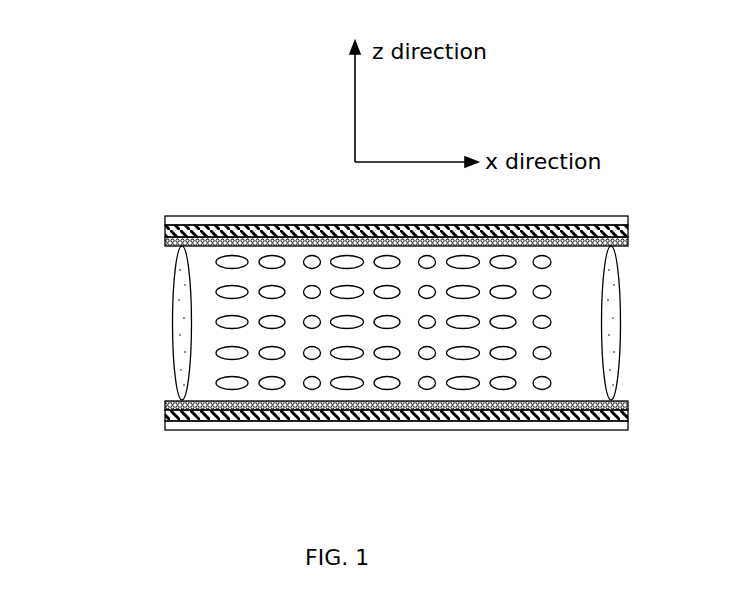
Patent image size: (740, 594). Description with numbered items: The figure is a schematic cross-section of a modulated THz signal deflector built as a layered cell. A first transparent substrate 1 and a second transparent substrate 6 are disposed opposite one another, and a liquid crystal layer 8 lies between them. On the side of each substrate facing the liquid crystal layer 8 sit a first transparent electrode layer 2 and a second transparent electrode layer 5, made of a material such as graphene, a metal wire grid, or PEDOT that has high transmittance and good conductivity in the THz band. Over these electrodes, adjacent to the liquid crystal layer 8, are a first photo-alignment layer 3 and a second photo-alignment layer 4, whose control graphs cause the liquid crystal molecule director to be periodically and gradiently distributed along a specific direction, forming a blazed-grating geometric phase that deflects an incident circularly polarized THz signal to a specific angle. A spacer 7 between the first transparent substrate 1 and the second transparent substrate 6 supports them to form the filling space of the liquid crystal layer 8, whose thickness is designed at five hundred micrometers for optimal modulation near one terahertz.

The first transparent substrate 1 is at (345, 179).
The first transparent electrode layer 2 is at (345, 195).
The first photo-alignment layer 3 is at (345, 210).
The second photo-alignment layer 4 is at (345, 436).
The second transparent electrode layer 5 is at (345, 450).
The second transparent substrate 6 is at (345, 466).
The spacer 7 is at (127, 323).
The liquid crystal layer 8 is at (561, 264).